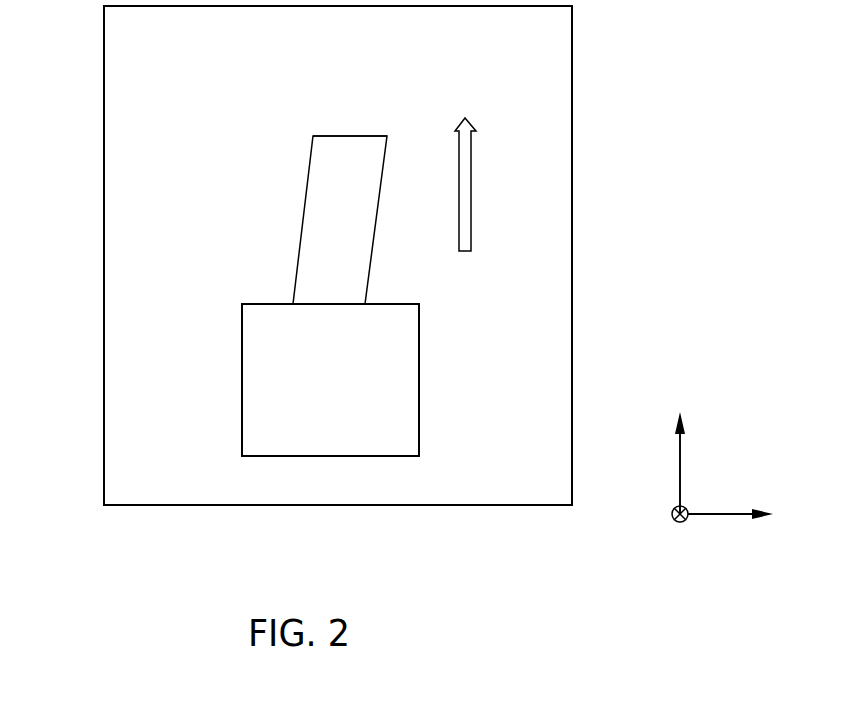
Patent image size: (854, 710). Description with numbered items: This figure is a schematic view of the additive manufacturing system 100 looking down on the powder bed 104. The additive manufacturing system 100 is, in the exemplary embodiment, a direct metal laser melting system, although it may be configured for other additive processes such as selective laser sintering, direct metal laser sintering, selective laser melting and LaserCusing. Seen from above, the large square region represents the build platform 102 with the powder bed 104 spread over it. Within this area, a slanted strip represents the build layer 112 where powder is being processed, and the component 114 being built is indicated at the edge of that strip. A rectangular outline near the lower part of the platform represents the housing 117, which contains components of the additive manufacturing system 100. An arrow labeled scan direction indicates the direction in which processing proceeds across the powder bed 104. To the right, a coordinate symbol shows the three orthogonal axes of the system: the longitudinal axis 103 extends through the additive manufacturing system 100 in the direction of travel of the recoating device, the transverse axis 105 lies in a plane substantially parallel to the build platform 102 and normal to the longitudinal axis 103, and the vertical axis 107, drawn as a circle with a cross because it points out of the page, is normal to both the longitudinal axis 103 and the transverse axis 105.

The additive manufacturing system 100 is at (375, 255).
The build platform 102 is at (103, 210).
The powder bed 104 is at (173, 53).
The build layer 112 is at (335, 247).
The component 114 is at (311, 158).
The housing 117 is at (420, 380).
The longitudinal axis 103 is at (678, 462).
The transverse axis 105 is at (728, 517).
The vertical axis 107 is at (670, 520).